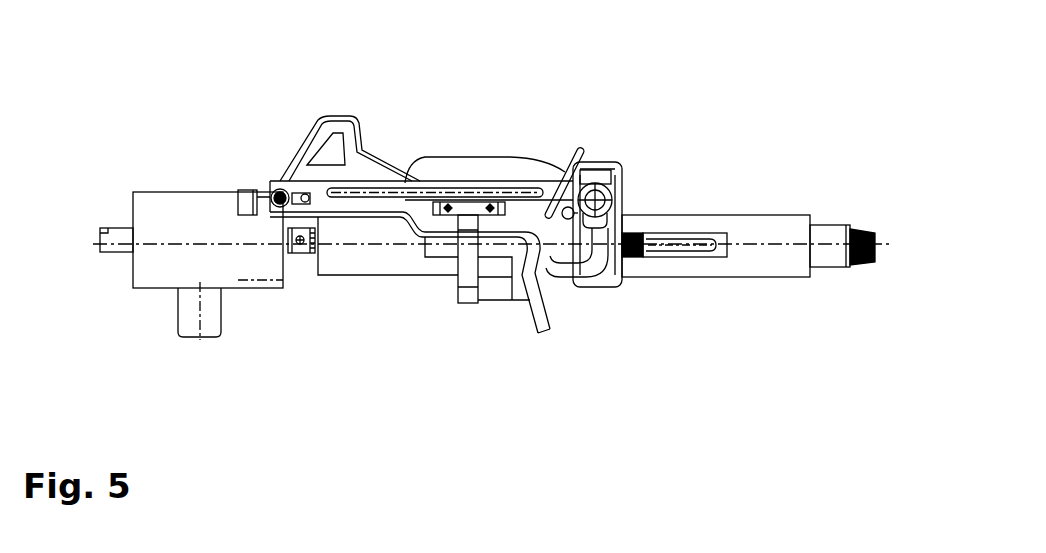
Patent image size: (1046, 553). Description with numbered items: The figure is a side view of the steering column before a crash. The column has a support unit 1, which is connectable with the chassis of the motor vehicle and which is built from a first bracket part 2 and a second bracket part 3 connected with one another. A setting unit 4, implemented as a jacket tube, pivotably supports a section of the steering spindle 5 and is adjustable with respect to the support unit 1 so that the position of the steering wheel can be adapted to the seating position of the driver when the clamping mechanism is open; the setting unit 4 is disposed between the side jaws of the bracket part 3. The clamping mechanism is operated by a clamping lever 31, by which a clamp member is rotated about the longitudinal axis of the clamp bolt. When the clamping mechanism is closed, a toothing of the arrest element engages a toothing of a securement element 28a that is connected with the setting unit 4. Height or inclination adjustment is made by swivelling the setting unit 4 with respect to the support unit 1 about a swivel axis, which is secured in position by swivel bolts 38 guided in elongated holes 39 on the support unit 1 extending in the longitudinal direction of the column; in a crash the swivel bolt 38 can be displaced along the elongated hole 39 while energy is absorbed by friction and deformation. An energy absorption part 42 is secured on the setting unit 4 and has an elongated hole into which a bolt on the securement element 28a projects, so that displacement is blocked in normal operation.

The support unit 1 is at (478, 130).
The first bracket part 2 is at (345, 158).
The second bracket part 3 is at (565, 173).
The setting unit 4 is at (738, 202).
The steering spindle 5 is at (833, 237).
The swivel bolt 38 is at (277, 206).
The elongated hole 39 is at (304, 204).
The clamping lever 31 is at (525, 312).
The securement element 28a is at (632, 258).
The energy absorption part 42 is at (717, 248).